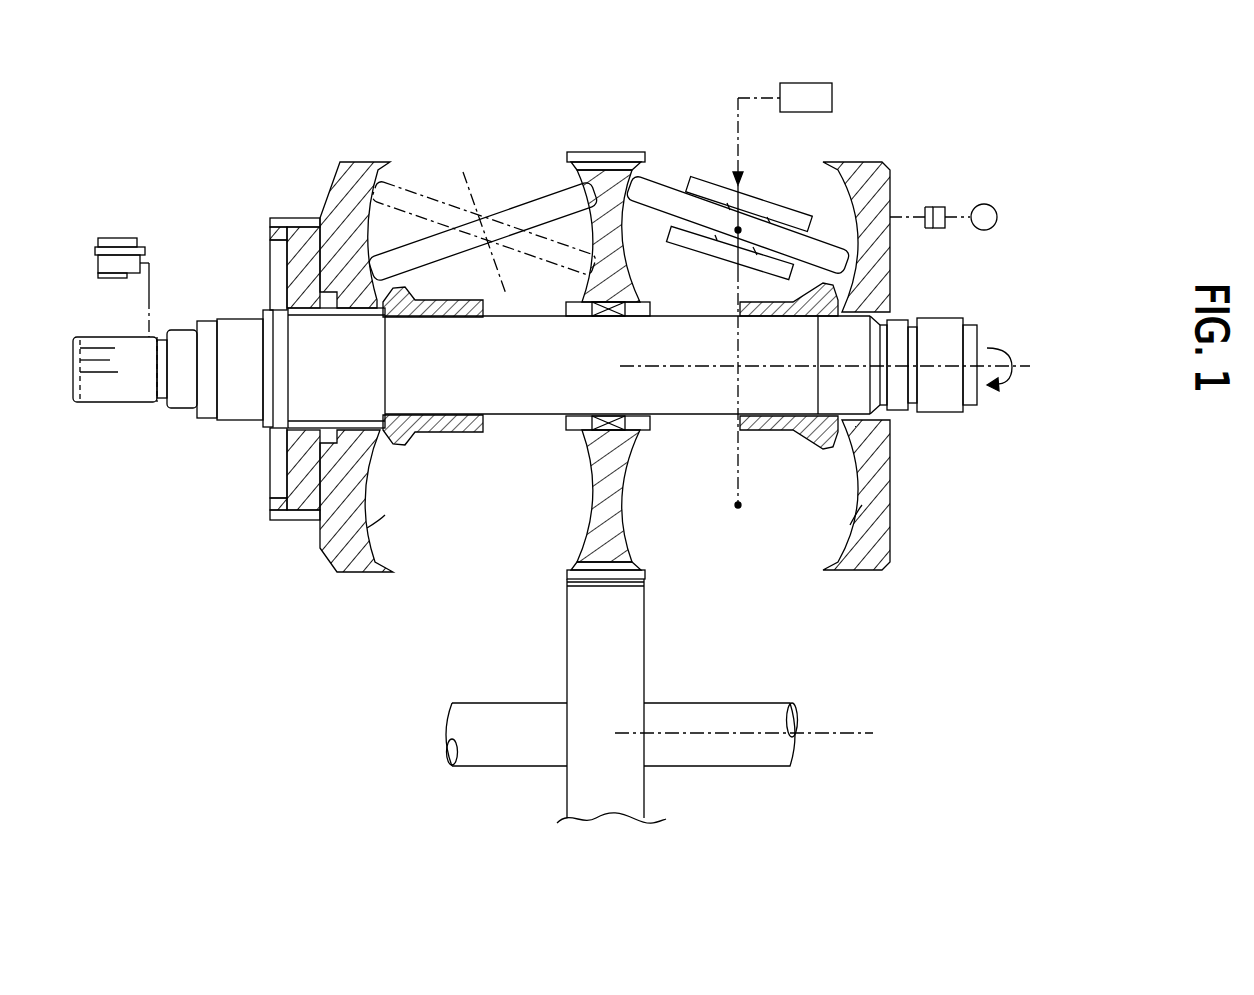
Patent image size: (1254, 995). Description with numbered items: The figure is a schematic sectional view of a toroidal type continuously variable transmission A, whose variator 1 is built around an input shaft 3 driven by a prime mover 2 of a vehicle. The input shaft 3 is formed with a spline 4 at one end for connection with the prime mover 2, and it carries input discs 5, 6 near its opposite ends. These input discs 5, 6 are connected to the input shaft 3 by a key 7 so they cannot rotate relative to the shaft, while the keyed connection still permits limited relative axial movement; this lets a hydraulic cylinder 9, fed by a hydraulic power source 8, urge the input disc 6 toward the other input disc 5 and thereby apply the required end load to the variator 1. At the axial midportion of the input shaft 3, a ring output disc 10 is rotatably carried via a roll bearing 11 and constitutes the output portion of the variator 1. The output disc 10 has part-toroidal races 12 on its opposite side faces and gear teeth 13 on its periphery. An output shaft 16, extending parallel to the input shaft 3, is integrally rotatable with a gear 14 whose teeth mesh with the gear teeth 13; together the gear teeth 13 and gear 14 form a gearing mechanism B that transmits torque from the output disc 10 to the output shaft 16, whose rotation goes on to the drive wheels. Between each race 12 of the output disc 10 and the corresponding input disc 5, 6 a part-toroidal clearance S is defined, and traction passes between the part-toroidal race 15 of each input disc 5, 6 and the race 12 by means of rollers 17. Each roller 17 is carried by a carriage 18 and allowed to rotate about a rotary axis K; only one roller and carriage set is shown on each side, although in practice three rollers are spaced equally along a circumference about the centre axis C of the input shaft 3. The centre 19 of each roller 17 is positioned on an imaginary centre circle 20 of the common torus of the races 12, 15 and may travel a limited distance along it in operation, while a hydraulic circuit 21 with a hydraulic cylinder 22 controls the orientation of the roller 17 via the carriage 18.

The variator 1 is at (607, 98).
The prime mover 2 is at (120, 238).
The input shaft 3 is at (703, 416).
The spline 4 is at (100, 390).
The input disc 5 is at (345, 495).
The input disc 6 is at (862, 478).
The key 7 is at (860, 318).
The hydraulic power source 8 is at (983, 203).
The hydraulic cylinder 9 is at (928, 205).
The ring output disc 10 is at (593, 478).
The roll bearing 11 is at (610, 318).
The part-toroidal race 12 is at (593, 507).
The gear teeth 13 is at (597, 152).
The gear 14 is at (645, 640).
The part-toroidal race 15 is at (367, 528).
The output shaft 16 is at (723, 765).
The roller 17 is at (437, 231).
The carriage 18 is at (705, 183).
The centre of roller 19 is at (741, 228).
The imaginary centre circle 20 is at (740, 481).
The hydraulic circuit 21 is at (737, 117).
The hydraulic cylinder 22 is at (810, 83).
The continuously variable transmission A is at (365, 107).
The gearing mechanism B is at (532, 593).
The centre axis C is at (952, 370).
The rotary axis K is at (480, 183).
The part-toroidal clearance S is at (498, 528).